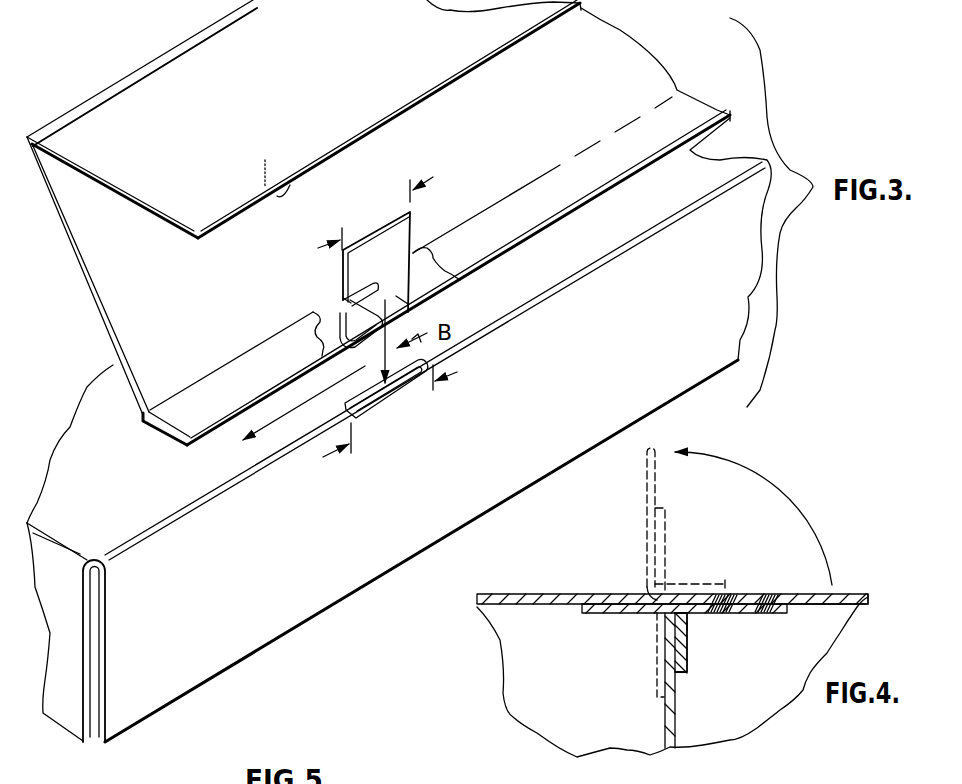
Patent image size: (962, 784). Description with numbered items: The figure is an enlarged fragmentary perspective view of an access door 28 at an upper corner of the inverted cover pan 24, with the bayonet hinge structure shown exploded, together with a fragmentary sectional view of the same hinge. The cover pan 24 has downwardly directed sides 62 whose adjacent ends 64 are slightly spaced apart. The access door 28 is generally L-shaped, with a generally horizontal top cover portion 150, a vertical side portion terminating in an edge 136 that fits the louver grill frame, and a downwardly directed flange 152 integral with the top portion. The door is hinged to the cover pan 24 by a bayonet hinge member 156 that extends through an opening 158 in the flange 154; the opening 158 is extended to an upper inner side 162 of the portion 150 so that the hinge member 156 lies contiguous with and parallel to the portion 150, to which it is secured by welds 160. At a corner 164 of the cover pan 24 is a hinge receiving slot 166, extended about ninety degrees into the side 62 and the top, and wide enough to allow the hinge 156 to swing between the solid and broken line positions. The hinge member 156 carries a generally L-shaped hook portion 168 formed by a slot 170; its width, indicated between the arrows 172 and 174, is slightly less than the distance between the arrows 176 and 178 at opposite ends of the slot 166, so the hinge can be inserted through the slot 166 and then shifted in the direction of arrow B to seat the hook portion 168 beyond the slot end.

In FIG. 3, the cover pan 24 is at (128, 506).
In FIG. 3, the access door 28 is at (430, 172).
In FIG. 4, the access door 28 is at (870, 590).
In FIG. 3, the sides 62 is at (293, 542).
In FIG. 3, the ends 64 is at (105, 676).
In FIG. 3, the edge 136 is at (288, 185).
In FIG. 3, the top cover portion 150 is at (190, 323).
In FIG. 4, the top cover portion 150 is at (833, 587).
In FIG. 3, the flange 152 is at (146, 151).
In FIG. 3, the flange 154 is at (250, 395).
In FIG. 4, the flange 154 is at (687, 660).
In FIG. 3, the bayonet hinge member 156 is at (396, 296).
In FIG. 4, the bayonet hinge member 156 is at (610, 618).
In FIG. 4, the opening 158 is at (688, 627).
In FIG. 4, the welds 160 is at (730, 593).
In FIG. 4, the upper inner side 162 is at (810, 606).
In FIG. 3, the corner 164 is at (478, 331).
In FIG. 4, the corner 164 is at (640, 586).
In FIG. 3, the hinge receiving slot 166 is at (408, 385).
In FIG. 4, the hinge receiving slot 166 is at (670, 590).
In FIG. 3, the hook portion 168 is at (351, 344).
In FIG. 3, the slot 170 is at (357, 304).
In FIG. 3, the arrow 172 is at (306, 250).
In FIG. 3, the arrow 174 is at (486, 209).
In FIG. 3, the arrow 176 is at (349, 454).
In FIG. 3, the arrow 178 is at (463, 382).